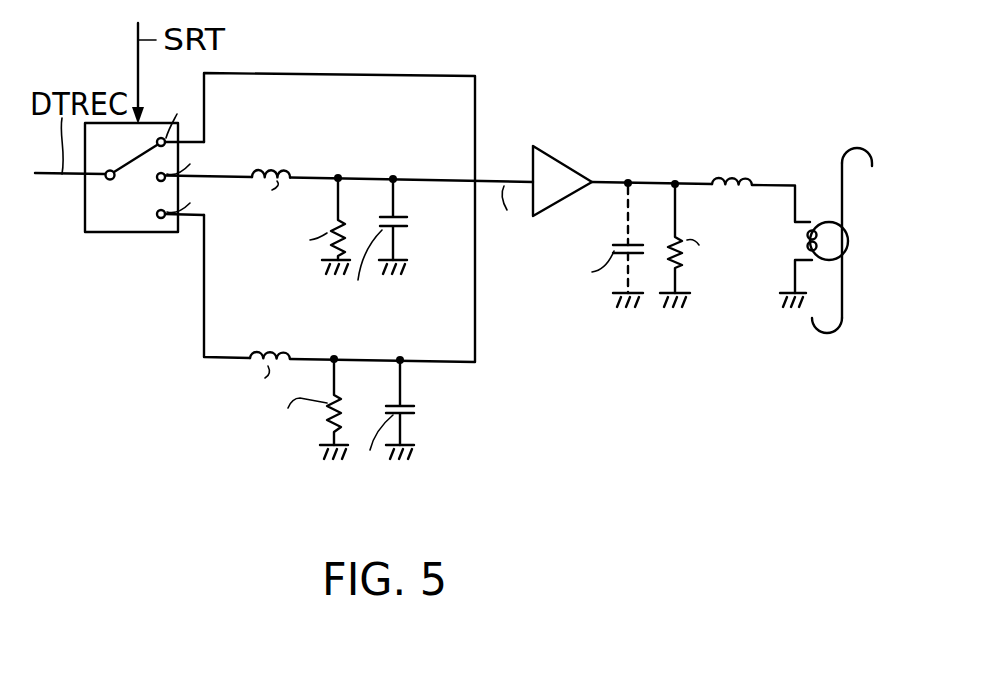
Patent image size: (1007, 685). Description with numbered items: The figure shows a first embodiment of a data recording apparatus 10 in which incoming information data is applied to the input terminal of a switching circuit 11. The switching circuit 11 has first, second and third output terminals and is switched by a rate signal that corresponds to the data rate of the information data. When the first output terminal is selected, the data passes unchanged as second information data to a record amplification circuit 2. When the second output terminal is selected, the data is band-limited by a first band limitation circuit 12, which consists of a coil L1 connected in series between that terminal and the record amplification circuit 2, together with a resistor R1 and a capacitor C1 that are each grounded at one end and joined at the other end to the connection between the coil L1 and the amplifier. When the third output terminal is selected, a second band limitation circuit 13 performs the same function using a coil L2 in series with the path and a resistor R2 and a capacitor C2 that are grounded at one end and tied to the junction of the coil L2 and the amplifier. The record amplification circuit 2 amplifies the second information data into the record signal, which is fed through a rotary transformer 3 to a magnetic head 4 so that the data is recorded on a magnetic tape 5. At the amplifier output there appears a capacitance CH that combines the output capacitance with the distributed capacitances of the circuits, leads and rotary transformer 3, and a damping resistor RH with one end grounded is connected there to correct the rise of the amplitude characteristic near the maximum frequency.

The record amplification circuit 2 is at (567, 157).
The rotary transformer 3 is at (746, 178).
The magnetic head 4 is at (808, 243).
The magnetic tape 5 is at (845, 312).
The data recording apparatus 10 is at (430, 33).
The switching circuit 11 is at (127, 213).
The first band limitation circuit 12 is at (322, 247).
The second band limitation circuit 13 is at (318, 422).
The coil L1 is at (270, 202).
The resistor R1 is at (302, 241).
The capacitor C1 is at (361, 273).
The coil L2 is at (248, 388).
The resistor R2 is at (294, 422).
The capacitor C2 is at (368, 454).
The capacitance CH is at (596, 247).
The damping resistor RH is at (701, 245).